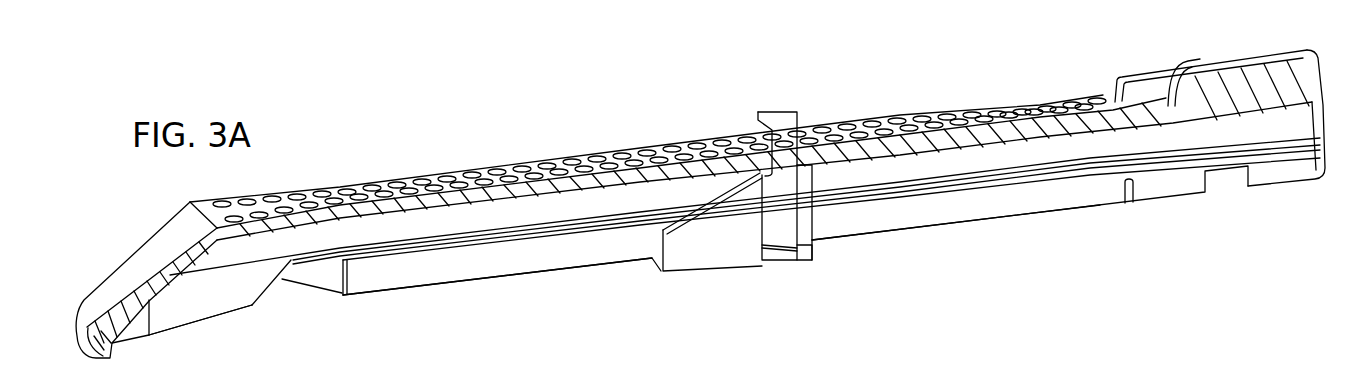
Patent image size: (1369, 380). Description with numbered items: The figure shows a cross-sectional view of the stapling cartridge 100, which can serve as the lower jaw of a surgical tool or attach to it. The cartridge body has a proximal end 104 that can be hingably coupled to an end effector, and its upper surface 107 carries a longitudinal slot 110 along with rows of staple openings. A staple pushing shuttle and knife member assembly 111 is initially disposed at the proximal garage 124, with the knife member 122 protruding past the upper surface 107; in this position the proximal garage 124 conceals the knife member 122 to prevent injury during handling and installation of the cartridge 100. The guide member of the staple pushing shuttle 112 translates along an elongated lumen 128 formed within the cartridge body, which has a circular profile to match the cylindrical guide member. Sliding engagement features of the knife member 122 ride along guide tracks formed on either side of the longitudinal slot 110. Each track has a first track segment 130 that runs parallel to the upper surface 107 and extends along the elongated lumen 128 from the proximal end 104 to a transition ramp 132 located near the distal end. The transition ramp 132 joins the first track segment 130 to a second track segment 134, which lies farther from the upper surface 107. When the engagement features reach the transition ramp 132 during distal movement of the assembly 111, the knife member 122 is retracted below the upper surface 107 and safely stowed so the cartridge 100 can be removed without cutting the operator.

The cartridge 100 is at (560, 90).
The proximal end 104 is at (1260, 225).
The upper surface 107 is at (649, 142).
The longitudinal slot 110 is at (422, 180).
The staple pushing shuttle and knife member assembly 111 is at (758, 300).
The staple pushing shuttle 112 is at (675, 278).
The knife member 122 is at (806, 112).
The proximal garage 124 is at (1222, 68).
The elongated lumen 128 is at (462, 224).
The first track segment 130 is at (518, 242).
The transition ramp 132 is at (270, 283).
The second track segment 134 is at (173, 316).